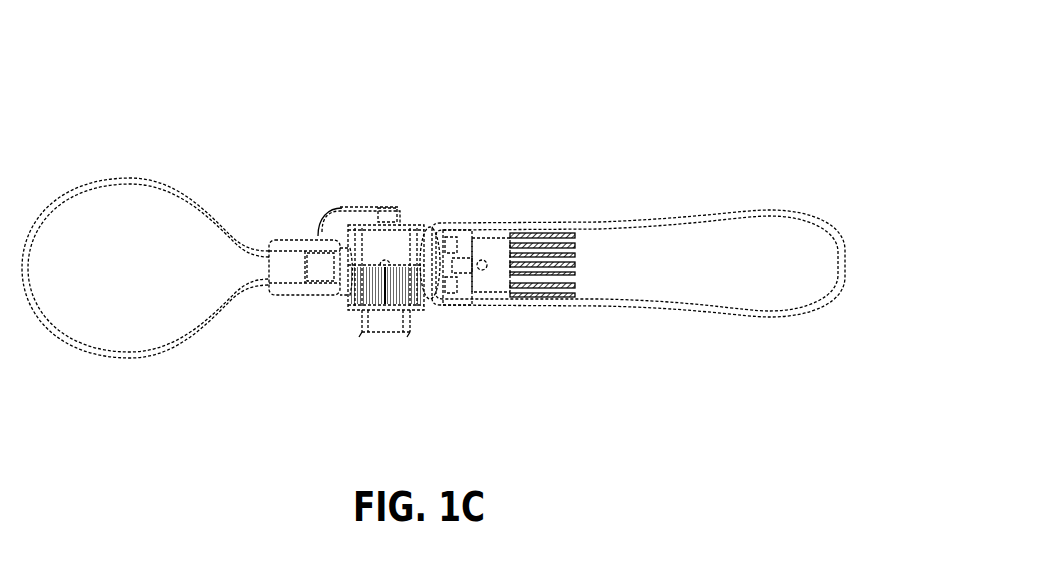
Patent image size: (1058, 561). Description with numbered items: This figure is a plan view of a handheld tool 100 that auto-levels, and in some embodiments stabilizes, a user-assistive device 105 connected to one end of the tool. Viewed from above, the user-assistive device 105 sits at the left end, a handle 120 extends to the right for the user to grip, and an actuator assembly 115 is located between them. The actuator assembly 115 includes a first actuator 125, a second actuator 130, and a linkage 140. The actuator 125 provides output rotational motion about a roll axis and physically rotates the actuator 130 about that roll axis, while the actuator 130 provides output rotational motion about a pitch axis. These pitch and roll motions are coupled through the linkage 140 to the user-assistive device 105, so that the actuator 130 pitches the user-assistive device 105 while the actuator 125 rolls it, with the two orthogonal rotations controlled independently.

The handheld tool 100 is at (712, 66).
The user-assistive device 105 is at (305, 268).
The actuator assembly 115 is at (573, 158).
The handle 120 is at (763, 308).
The actuator 125 is at (488, 290).
The actuator 130 is at (365, 331).
The linkage 140 is at (342, 208).